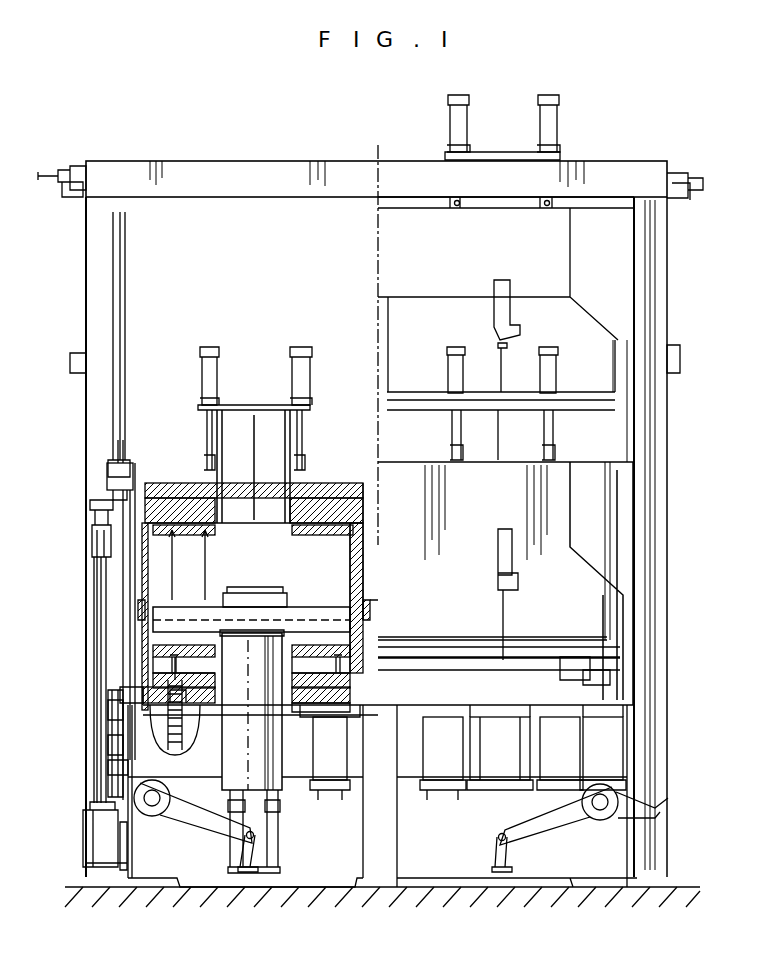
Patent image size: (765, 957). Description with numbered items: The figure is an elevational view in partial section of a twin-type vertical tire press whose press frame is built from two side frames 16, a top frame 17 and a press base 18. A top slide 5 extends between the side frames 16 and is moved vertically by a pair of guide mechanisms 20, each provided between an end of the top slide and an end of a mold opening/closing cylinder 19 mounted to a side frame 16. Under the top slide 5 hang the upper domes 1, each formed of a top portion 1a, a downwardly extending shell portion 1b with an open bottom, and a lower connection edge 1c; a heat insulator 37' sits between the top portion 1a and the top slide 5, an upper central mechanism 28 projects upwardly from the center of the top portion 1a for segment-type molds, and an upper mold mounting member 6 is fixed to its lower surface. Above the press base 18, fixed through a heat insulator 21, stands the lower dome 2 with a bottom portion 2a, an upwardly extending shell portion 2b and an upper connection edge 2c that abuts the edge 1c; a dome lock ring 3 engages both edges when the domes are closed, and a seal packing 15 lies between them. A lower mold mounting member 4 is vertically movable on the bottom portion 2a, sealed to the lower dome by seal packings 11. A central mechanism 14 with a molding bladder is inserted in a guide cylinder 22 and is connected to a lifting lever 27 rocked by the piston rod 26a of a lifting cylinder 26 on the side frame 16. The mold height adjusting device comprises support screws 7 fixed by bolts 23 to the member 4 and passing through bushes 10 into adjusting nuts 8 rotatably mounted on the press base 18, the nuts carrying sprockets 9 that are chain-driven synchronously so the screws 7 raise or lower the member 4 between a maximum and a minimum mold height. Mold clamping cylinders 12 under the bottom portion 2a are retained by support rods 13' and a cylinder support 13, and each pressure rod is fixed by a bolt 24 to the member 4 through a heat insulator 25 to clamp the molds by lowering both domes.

The upper dome 1 is at (365, 505).
The top portion 1a is at (192, 505).
The shell portion 1b is at (140, 552).
The lower connection edge 1c is at (140, 572).
The lower dome 2 is at (365, 690).
The bottom portion 2a is at (140, 672).
The shell portion 2b is at (140, 648).
The upper connection edge 2c is at (140, 625).
The dome lock ring 3 is at (365, 625).
The lower mold mounting member 4 is at (295, 640).
The top slide 5 is at (385, 478).
The upper mold mounting member 6 is at (308, 535).
The support screws 7 is at (182, 740).
The adjusting nuts 8 is at (165, 735).
The sprockets 9 is at (188, 735).
The bushes 10 is at (140, 695).
The heat/pressure medium seal packings 11 is at (375, 650).
The mold clamping cylinders 12 is at (322, 790).
The cylinder support 13 is at (388, 777).
The support rods 13' is at (463, 747).
The central mechanism 14 is at (268, 724).
The heat/pressure medium seal packing 15 is at (365, 590).
The side frames 16 is at (95, 392).
The top frame 17 is at (355, 175).
The press base 18 is at (120, 745).
The mold opening/closing cylinder 19 is at (100, 600).
The guide mechanisms 20 is at (100, 520).
The heat insulator 21 is at (120, 765).
The guide cylinder 22 is at (268, 792).
The bolts 23 is at (175, 655).
The bolt 24 is at (350, 632).
The heat insulator 25 is at (352, 712).
The lifting cylinder 26 is at (90, 727).
The piston rod 26a is at (90, 805).
The lifting lever 27 is at (205, 828).
The upper central mechanism 28 is at (282, 427).
The heat insulator 37' is at (135, 464).